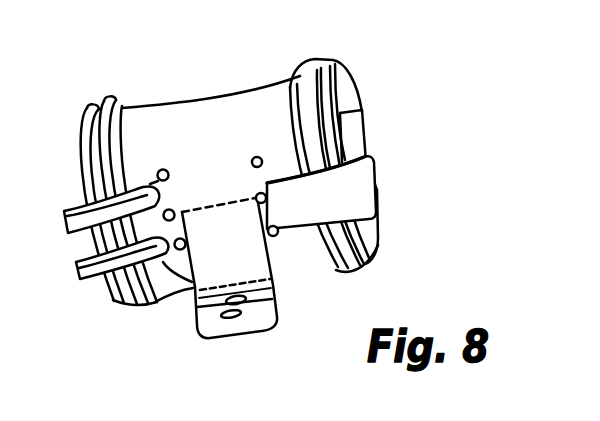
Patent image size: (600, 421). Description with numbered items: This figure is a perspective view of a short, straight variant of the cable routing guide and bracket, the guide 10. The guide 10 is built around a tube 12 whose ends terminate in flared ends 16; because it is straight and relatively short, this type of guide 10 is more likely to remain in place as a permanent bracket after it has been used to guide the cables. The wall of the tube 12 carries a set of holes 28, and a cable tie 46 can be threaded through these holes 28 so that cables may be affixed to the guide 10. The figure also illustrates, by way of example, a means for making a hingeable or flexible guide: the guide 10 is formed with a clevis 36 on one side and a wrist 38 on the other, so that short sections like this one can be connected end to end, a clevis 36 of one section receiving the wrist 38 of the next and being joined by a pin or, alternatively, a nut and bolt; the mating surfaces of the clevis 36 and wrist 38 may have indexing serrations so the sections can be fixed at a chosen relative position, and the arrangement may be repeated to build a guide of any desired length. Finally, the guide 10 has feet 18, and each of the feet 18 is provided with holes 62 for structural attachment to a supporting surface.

The guide 10 is at (241, 187).
The tube 12 is at (208, 127).
The flared ends 16 is at (362, 195).
The feet 18 is at (234, 278).
The holes 28 is at (161, 171).
The clevis 36 is at (103, 275).
The wrist 38 is at (322, 208).
The cable tie 46 is at (352, 136).
The holes 62 is at (247, 300).